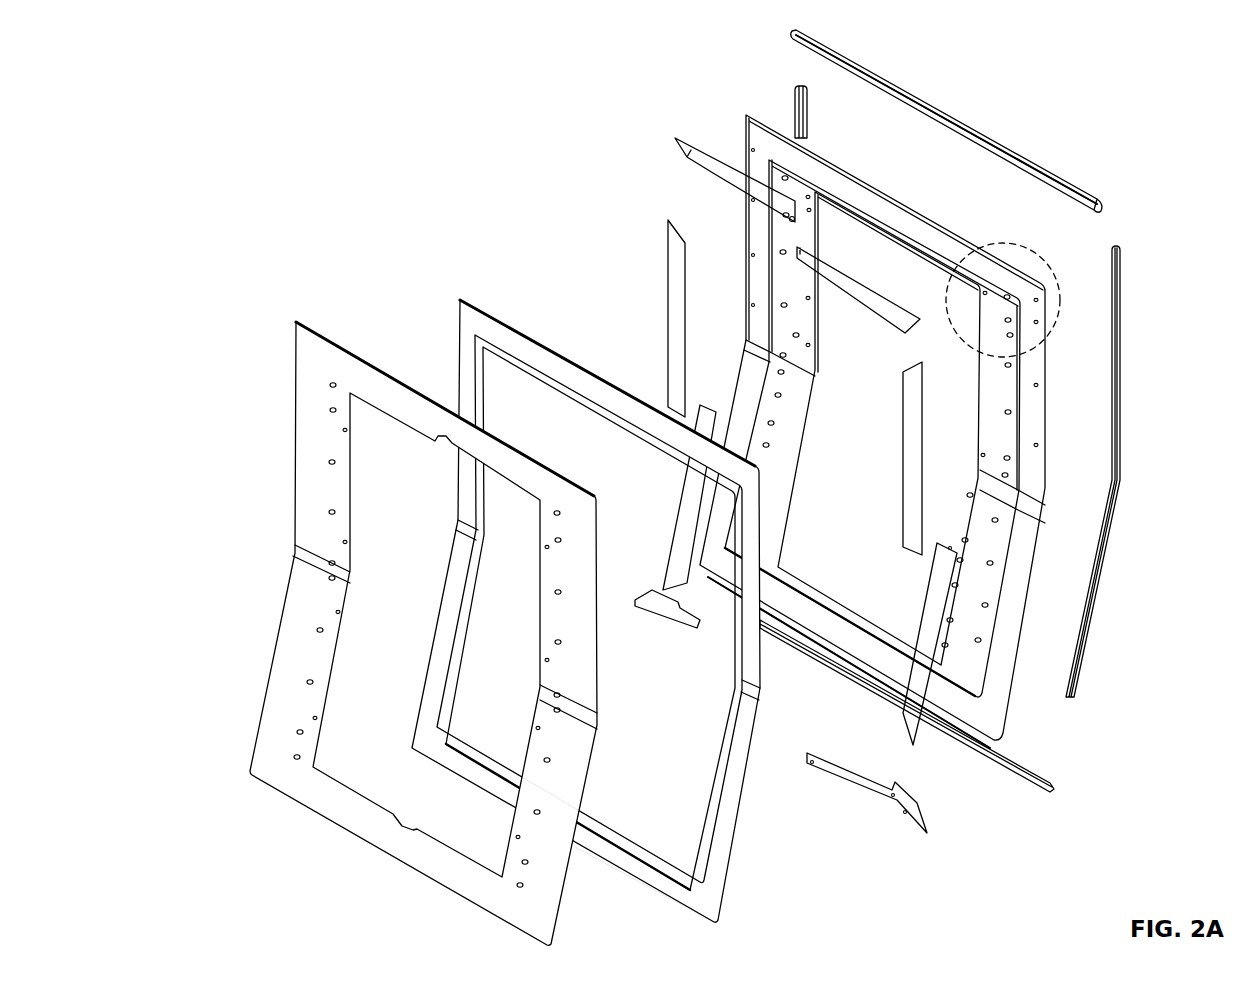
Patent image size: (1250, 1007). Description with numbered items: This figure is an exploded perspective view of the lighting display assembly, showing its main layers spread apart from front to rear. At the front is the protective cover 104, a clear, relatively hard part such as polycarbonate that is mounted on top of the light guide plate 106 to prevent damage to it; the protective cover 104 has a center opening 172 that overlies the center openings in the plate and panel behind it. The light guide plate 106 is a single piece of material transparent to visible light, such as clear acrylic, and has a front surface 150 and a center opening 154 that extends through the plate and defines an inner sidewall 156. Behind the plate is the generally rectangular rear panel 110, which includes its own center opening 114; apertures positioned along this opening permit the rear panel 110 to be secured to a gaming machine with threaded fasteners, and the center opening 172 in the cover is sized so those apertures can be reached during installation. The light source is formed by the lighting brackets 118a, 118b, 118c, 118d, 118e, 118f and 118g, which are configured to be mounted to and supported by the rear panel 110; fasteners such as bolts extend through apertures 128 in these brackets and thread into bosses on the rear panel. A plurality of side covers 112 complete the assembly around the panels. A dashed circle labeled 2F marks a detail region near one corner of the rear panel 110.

The protective cover 104 is at (300, 796).
The light guide plate 106 is at (685, 917).
The rear panel 110 is at (898, 208).
The side covers 112 is at (795, 92).
The center opening 114 is at (920, 285).
The lighting bracket 118a is at (862, 300).
The lighting bracket 118b is at (905, 470).
The lighting bracket 118c is at (912, 725).
The lighting bracket 118d is at (880, 805).
The lighting bracket 118e is at (688, 500).
The lighting bracket 118f is at (672, 322).
The lighting bracket 118g is at (698, 158).
The apertures 128 is at (952, 548).
The front surface 150 is at (653, 888).
The center opening 154 is at (684, 848).
The inner sidewall 156 is at (715, 777).
The center opening 172 is at (366, 660).
The detail view circle 2F is at (1062, 300).